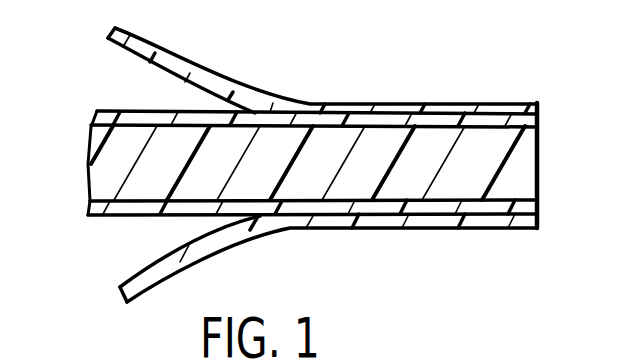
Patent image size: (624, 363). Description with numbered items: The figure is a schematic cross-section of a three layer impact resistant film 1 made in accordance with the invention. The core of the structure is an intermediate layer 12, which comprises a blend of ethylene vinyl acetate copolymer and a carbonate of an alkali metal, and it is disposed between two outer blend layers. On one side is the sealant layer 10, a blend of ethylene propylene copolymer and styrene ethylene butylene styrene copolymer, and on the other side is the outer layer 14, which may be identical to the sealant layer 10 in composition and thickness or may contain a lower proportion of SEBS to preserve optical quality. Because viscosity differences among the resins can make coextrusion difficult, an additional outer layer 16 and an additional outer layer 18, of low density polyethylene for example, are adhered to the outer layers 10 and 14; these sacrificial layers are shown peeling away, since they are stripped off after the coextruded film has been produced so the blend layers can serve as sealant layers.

The impact resistant film 1 is at (309, 162).
The sealant layer 10 is at (97, 112).
The intermediate layer 12 is at (540, 149).
The outer layer 14 is at (90, 203).
The additional outer layer 16 is at (113, 41).
The additional outer layer 18 is at (147, 265).